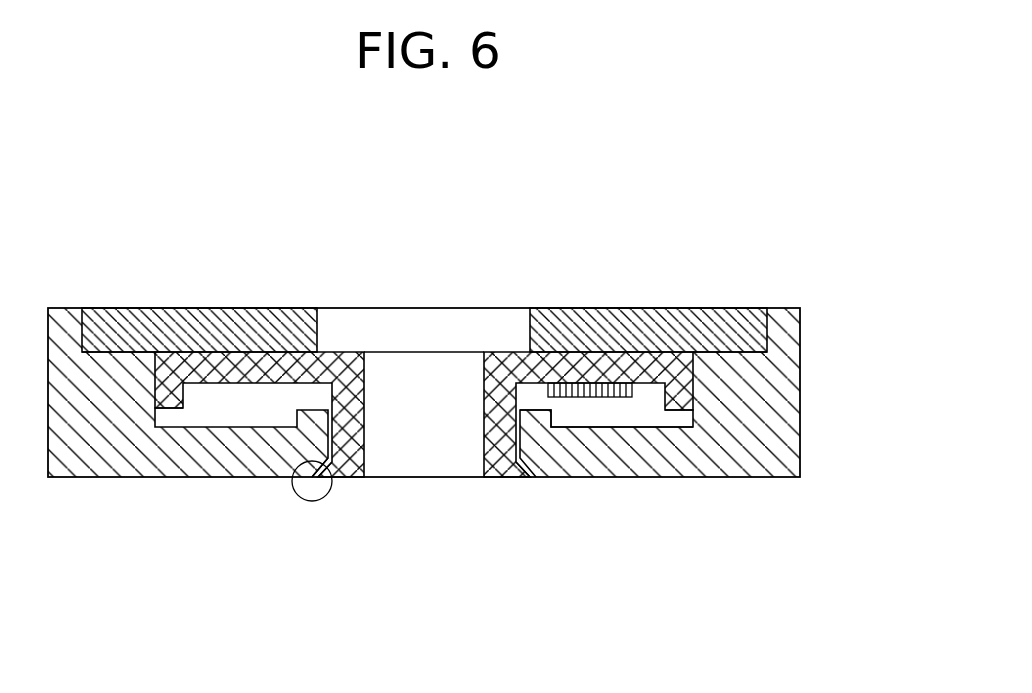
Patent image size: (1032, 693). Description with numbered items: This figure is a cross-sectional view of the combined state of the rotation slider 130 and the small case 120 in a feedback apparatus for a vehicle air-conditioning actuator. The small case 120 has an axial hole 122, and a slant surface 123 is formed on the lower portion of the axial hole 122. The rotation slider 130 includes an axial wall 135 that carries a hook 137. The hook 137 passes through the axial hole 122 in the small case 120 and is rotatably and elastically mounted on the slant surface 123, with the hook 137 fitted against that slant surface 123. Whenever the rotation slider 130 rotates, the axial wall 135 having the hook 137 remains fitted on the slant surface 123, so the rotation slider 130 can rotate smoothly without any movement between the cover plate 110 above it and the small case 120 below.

The cover plate 110 is at (648, 322).
The small case 120 is at (787, 407).
The axial hole 122 is at (535, 438).
The slant surface 123 is at (295, 477).
The rotation slider 130 is at (503, 373).
The axial wall 135 is at (497, 458).
The hook 137 is at (330, 477).